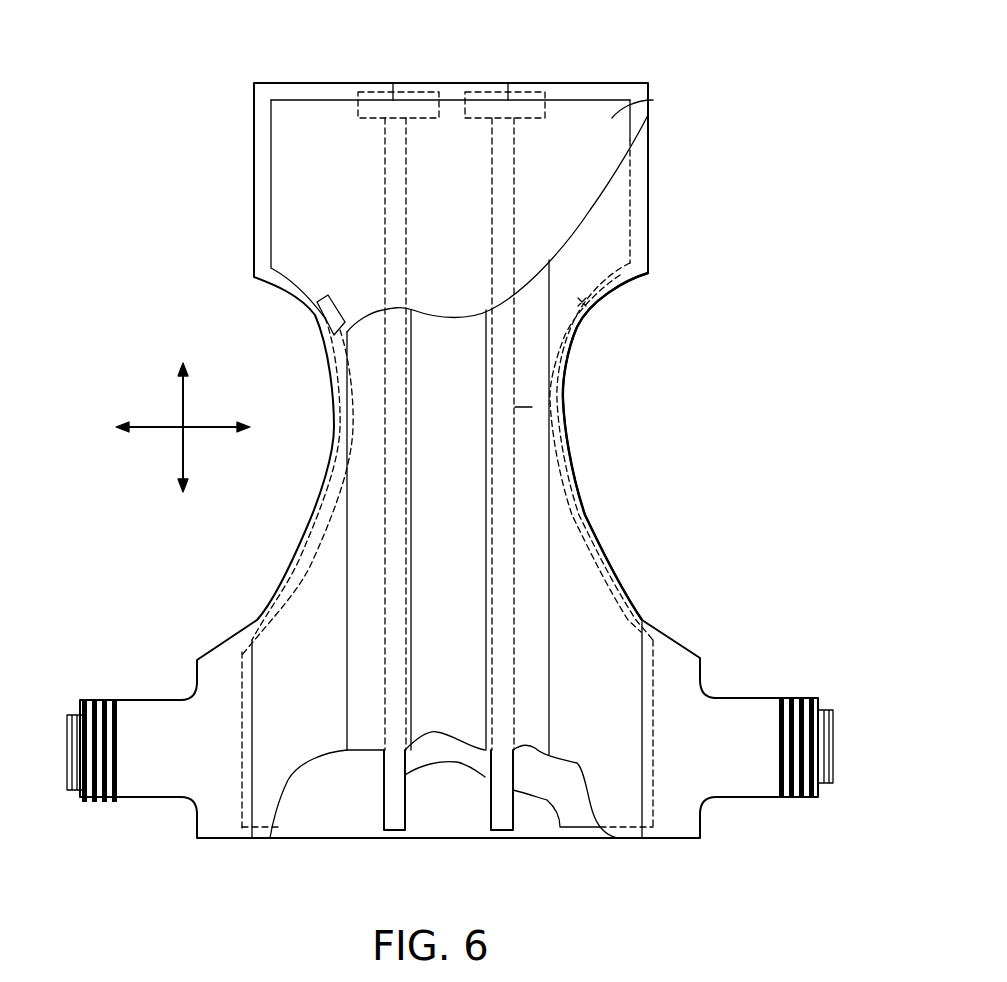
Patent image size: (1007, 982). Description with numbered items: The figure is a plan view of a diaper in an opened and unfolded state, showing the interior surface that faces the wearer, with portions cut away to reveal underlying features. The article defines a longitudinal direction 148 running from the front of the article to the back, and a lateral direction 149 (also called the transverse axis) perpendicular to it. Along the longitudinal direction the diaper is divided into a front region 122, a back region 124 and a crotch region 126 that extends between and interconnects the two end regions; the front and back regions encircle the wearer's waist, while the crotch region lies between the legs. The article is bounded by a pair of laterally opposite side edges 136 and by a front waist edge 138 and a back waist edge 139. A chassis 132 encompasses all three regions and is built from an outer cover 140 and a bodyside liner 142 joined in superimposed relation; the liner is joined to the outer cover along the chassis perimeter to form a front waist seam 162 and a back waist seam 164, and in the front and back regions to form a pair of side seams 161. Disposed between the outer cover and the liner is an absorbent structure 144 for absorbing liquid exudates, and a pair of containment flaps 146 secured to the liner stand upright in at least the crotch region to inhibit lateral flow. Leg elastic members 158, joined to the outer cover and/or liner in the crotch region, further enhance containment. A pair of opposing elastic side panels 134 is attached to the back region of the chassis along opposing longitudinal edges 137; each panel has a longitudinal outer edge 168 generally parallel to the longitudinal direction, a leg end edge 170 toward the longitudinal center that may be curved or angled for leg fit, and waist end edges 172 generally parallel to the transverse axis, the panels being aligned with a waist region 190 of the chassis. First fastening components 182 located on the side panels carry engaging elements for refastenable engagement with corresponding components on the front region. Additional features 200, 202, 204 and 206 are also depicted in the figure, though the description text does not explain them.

The front region 122 is at (432, 226).
The back region 124 is at (422, 678).
The crotch region 126 is at (432, 394).
The chassis 132 is at (355, 537).
The elastic side panels 134 is at (215, 827).
The side edges 136 is at (322, 482).
The longitudinal edges 137 is at (253, 720).
The front waist edge 138 is at (310, 82).
The back waist edge 139 is at (318, 838).
The outer cover 140 is at (433, 827).
The bodyside liner 142 is at (572, 698).
The absorbent structure 144 is at (653, 100).
The containment flaps 146 is at (345, 638).
The longitudinal direction 148 is at (186, 393).
The lateral direction 149 is at (193, 430).
The leg elastic members 158 is at (340, 300).
The side seams 161 is at (237, 640).
The front waist seam 162 is at (465, 69).
The back waist seam 164 is at (528, 827).
The longitudinal outer edge 168 is at (193, 738).
The leg end edge 170 is at (213, 652).
The waist end edges 172 is at (653, 838).
The first fastening components 182 is at (95, 803).
The waist region 190 is at (433, 752).
The channel 200 is at (413, 533).
The channel 202 is at (567, 412).
The fastening tab 204 is at (398, 80).
The fastening tab 206 is at (512, 75).